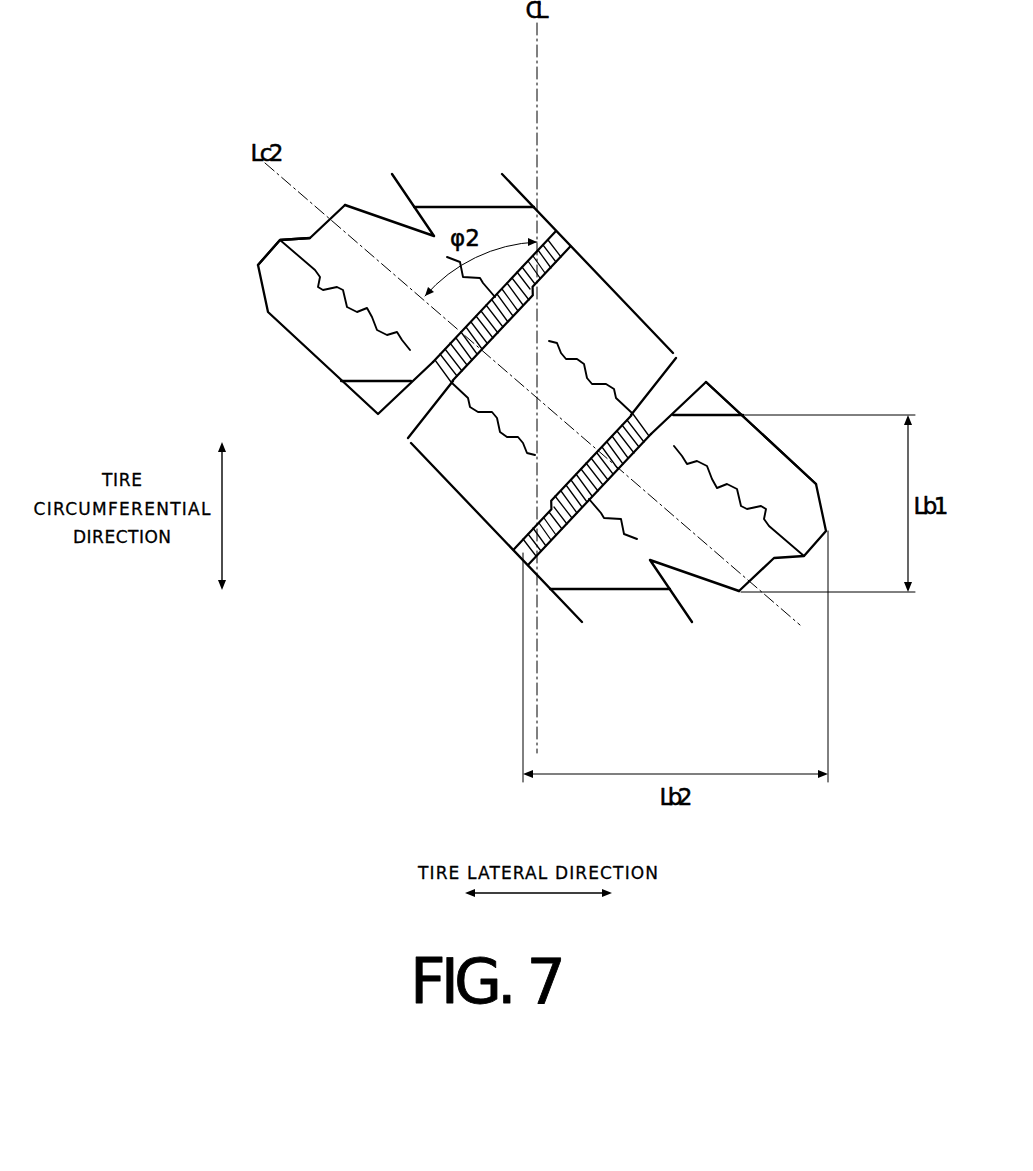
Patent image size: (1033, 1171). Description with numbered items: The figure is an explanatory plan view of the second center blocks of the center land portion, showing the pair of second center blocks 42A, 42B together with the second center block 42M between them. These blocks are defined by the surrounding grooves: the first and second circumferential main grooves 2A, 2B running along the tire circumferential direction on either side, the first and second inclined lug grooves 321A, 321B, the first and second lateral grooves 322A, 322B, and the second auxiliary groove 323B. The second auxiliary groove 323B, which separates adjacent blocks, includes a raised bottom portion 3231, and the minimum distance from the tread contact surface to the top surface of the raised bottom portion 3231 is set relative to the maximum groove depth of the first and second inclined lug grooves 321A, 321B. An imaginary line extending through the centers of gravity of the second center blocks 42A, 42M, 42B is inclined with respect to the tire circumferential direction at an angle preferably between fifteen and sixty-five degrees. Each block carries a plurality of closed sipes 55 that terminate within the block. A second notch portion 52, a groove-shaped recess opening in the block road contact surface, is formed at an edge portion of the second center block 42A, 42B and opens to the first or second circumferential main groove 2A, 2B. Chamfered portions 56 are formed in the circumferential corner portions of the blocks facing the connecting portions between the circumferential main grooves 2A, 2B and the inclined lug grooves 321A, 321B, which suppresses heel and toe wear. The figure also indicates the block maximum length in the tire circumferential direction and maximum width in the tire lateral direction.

The first circumferential main groove 2A is at (254, 290).
The second circumferential main groove 2B is at (838, 517).
The second center block 42A is at (275, 240).
The second center block 42B is at (760, 425).
The second center block 42M is at (618, 280).
The second notch portion 52 is at (704, 597).
The closed sipe 55 is at (592, 683).
The chamfered portion 56 is at (375, 397).
The first inclined lug groove 321A is at (345, 412).
The second inclined lug groove 321B is at (573, 223).
The first lateral groove 322A is at (630, 606).
The second lateral groove 322B is at (443, 188).
The second auxiliary groove 323B is at (407, 408).
The raised bottom portion 3231 is at (453, 384).